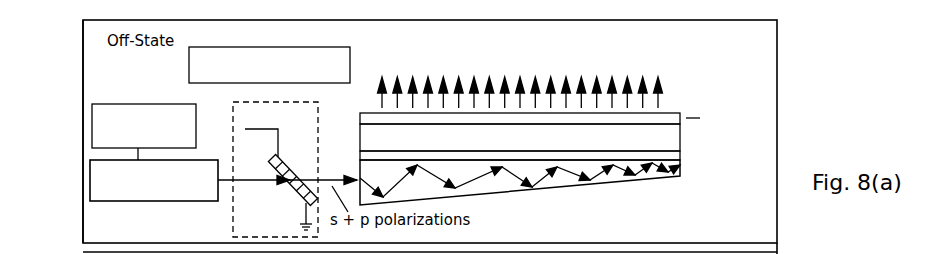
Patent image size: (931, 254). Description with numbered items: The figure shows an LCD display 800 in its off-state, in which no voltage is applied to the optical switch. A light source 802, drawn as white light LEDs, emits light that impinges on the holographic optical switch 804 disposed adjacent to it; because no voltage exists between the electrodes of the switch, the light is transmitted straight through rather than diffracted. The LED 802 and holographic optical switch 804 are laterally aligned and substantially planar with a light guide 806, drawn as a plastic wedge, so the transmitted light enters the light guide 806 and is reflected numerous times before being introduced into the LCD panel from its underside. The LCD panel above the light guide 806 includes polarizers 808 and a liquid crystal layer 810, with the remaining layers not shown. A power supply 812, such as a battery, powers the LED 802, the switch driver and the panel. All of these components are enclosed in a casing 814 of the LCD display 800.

The LCD display 800 is at (753, 56).
The light source 802 is at (100, 182).
The holographic optical switch 804 is at (273, 115).
The light guide 806 is at (620, 182).
The polarizers 808 is at (682, 155).
The liquid crystal layer 810 is at (520, 142).
The power supply 812 is at (92, 126).
The casing 814 is at (83, 85).